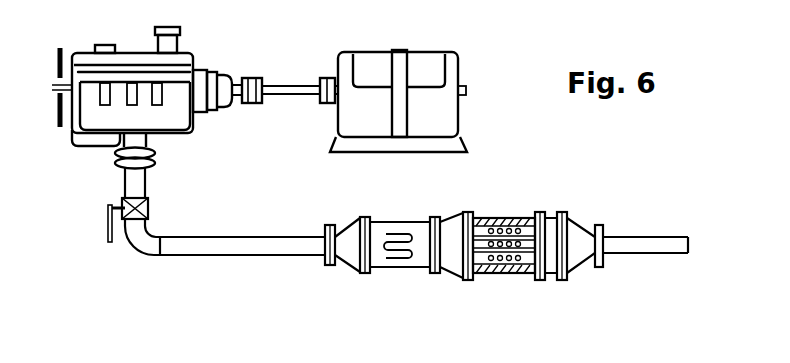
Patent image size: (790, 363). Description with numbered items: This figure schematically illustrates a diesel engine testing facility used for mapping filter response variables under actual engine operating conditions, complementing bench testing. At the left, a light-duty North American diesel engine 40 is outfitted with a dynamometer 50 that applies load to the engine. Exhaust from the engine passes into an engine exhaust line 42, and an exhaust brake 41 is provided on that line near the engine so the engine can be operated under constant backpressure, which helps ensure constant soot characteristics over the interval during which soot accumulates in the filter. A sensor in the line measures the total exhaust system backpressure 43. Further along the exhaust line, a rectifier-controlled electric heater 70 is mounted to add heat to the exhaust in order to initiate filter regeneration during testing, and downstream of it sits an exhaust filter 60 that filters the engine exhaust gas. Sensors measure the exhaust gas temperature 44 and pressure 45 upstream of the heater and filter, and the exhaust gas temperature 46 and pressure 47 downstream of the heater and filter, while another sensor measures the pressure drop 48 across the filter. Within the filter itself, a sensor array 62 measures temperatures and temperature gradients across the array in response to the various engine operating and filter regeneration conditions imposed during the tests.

The engine 40 is at (191, 60).
The dynamometer 50 is at (338, 63).
The total exhaust system backpressure sensor 43 is at (128, 182).
The exhaust brake 41 is at (147, 208).
The engine exhaust line 42 is at (138, 247).
The exhaust gas temperature sensor 44 is at (300, 253).
The exhaust gas pressure sensor 45 is at (295, 236).
The rectifier-controlled electric heater 70 is at (398, 232).
The filter pressure drop sensor 48 is at (527, 253).
The exhaust filter 60 is at (478, 273).
The sensor array 62 is at (518, 259).
The exhaust gas temperature sensor 46 is at (615, 250).
The exhaust gas pressure sensor 47 is at (622, 238).